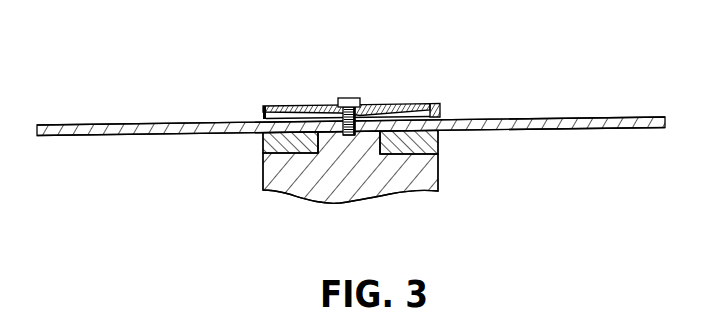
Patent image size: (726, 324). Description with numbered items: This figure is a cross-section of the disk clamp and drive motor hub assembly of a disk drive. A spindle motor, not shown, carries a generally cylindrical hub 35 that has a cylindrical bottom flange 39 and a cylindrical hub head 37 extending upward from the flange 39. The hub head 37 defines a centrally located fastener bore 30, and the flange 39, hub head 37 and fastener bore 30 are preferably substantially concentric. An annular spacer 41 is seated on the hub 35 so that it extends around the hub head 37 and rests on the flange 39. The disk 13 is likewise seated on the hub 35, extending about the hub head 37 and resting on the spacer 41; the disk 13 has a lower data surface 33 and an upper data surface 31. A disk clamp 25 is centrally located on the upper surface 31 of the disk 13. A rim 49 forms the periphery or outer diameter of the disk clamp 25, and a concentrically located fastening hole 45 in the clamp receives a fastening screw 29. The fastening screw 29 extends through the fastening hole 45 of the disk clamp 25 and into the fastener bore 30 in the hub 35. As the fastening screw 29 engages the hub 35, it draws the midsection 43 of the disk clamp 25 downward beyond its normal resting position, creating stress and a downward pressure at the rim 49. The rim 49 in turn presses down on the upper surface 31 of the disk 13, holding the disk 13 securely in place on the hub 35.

The disk 13 is at (647, 131).
The disk clamp 25 is at (320, 77).
The fastening screw 29 is at (350, 98).
The fastener bore 30 is at (350, 137).
The upper data surface 31 is at (535, 117).
The lower data surface 33 is at (577, 131).
The hub 35 is at (311, 180).
The hub head 37 is at (368, 137).
The bottom flange 39 is at (263, 166).
The spacer 41 is at (439, 138).
The midsection 43 is at (332, 112).
The fastening hole 45 is at (363, 112).
The rim 49 is at (435, 103).